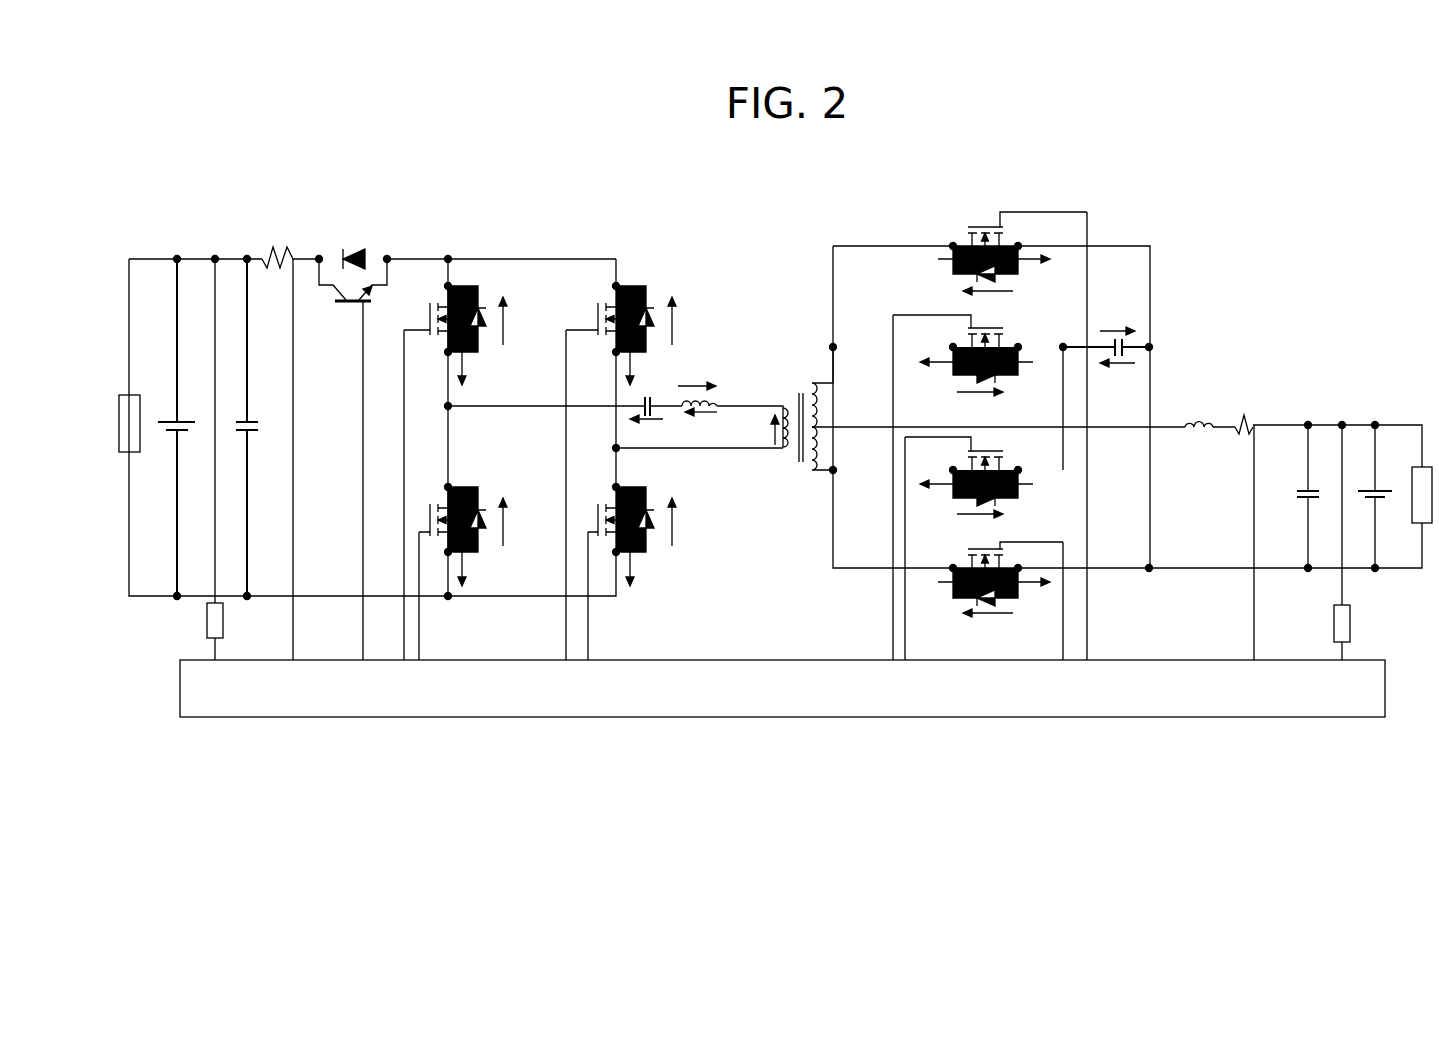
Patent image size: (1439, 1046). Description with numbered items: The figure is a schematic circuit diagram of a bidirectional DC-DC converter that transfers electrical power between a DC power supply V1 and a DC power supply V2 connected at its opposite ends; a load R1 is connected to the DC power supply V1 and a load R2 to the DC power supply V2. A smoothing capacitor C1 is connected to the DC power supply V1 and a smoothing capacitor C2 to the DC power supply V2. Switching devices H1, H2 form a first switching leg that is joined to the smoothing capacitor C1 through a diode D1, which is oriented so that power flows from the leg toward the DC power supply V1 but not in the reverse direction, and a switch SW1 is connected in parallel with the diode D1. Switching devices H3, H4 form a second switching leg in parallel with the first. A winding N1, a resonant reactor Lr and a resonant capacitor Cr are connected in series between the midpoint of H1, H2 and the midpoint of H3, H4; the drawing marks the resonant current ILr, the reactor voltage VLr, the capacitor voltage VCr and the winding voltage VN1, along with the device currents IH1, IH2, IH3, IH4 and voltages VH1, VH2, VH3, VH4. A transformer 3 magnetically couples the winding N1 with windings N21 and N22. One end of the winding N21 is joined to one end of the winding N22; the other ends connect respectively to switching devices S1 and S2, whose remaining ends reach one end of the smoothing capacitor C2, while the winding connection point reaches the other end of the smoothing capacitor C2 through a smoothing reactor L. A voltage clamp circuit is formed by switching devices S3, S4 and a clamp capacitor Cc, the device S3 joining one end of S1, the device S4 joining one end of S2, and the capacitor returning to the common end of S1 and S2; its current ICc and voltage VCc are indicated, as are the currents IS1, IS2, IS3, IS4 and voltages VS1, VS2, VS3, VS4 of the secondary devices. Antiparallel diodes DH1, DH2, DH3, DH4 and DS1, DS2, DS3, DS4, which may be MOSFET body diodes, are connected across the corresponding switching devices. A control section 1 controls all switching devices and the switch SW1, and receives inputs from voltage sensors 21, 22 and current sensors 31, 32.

The control section 1 is at (682, 660).
The transformer 3 is at (790, 390).
The voltage sensor 21 is at (206, 621).
The voltage sensor 22 is at (1352, 623).
The current sensor 31 is at (276, 246).
The current sensor 32 is at (1246, 420).
The load R1 is at (139, 393).
The DC power supply V1 is at (184, 418).
The smoothing capacitor C1 is at (253, 418).
The diode D1 is at (352, 250).
The switch SW1 is at (351, 314).
The switching device H1 is at (430, 320).
The switching device H2 is at (430, 520).
The switching device H3 is at (598, 320).
The switching device H4 is at (598, 520).
The antiparallel diode DH1 is at (480, 308).
The antiparallel diode DH2 is at (480, 510).
The antiparallel diode DH3 is at (648, 308).
The antiparallel diode DH4 is at (648, 510).
The current through H1 IH1 is at (480, 342).
The current through H2 IH2 is at (480, 542).
The current through H3 IH3 is at (648, 342).
The current through H4 IH4 is at (648, 542).
The voltage across H1 VH1 is at (526, 321).
The voltage across H2 VH2 is at (526, 522).
The voltage across H3 VH3 is at (696, 321).
The voltage across H4 VH4 is at (696, 522).
The resonant capacitor Cr is at (640, 412).
The resonant capacitor voltage VCr is at (651, 431).
The resonant reactor Lr is at (722, 404).
The resonant inductor current ILr is at (697, 374).
The resonant inductor voltage VLr is at (703, 426).
The winding N1 is at (785, 450).
The primary winding voltage VN1 is at (753, 433).
The winding N21 is at (818, 440).
The winding N22 is at (818, 406).
The switching device S1 is at (966, 550).
The switching device S2 is at (966, 228).
The switching device S3 is at (966, 452).
The switching device S4 is at (966, 329).
The antiparallel diode DS1 is at (975, 602).
The antiparallel diode DS2 is at (975, 279).
The antiparallel diode DS3 is at (975, 504).
The antiparallel diode DS4 is at (975, 381).
The current through S1 IS1 is at (999, 593).
The current through S2 IS2 is at (999, 270).
The current through S3 IS3 is at (990, 495).
The current through S4 IS4 is at (990, 372).
The voltage across S1 VS1 is at (991, 627).
The voltage across S2 VS2 is at (991, 306).
The voltage across S3 VS3 is at (988, 527).
The voltage across S4 VS4 is at (988, 406).
The clamp capacitor Cc is at (1128, 346).
The clamp capacitor current ICc is at (1115, 320).
The voltage of the clamp capacitor VCc is at (1118, 376).
The smoothing reactor L is at (1198, 420).
The smoothing capacitor C2 is at (1301, 490).
The DC power supply V2 is at (1372, 488).
The load R2 is at (1420, 466).